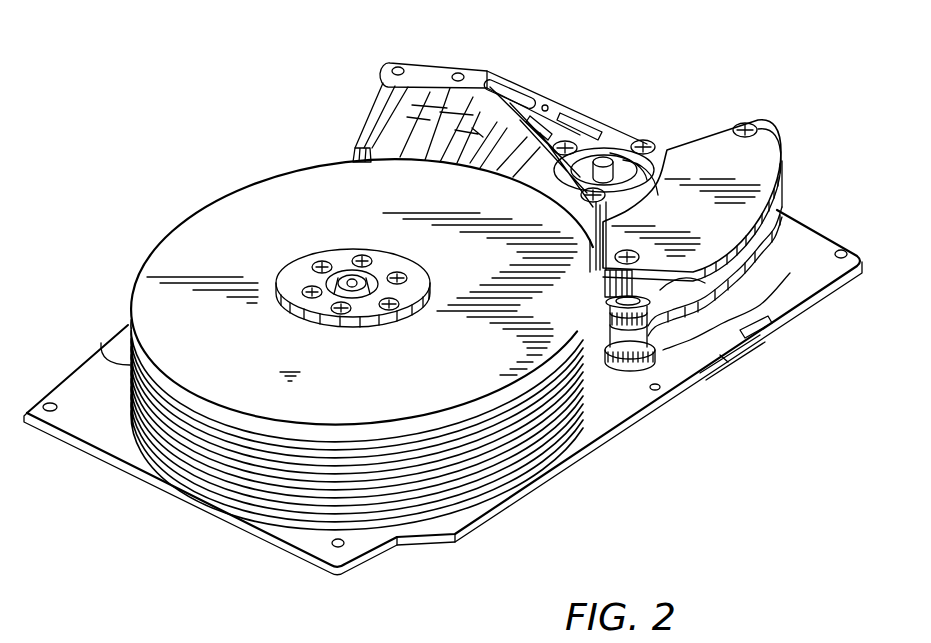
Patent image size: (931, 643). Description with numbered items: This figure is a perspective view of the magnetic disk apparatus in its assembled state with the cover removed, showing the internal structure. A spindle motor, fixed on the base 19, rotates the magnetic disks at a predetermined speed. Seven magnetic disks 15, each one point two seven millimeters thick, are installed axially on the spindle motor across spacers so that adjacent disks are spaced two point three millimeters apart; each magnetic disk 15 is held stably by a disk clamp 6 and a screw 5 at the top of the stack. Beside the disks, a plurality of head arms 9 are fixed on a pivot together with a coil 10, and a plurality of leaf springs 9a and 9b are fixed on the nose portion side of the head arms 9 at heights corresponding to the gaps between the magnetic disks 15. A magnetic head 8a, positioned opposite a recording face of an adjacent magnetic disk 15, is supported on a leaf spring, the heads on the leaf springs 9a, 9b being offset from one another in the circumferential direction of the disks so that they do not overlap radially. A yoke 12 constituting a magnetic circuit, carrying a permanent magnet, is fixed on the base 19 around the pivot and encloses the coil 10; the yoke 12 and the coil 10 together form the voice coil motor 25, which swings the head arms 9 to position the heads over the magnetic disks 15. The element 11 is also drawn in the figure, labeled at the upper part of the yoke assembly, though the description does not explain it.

The screw 5 is at (300, 292).
The disk clamp 6 is at (292, 272).
The magnetic head 8a is at (357, 148).
The head arm 9 is at (523, 97).
The leaf spring 9a is at (385, 100).
The leaf spring 9b is at (443, 105).
The coil 10 is at (760, 337).
The magnet plate 11 is at (745, 128).
The yoke 12 is at (748, 362).
The magnetic disk 15 is at (258, 178).
The base 19 is at (145, 465).
The voice coil motor 25 is at (815, 333).